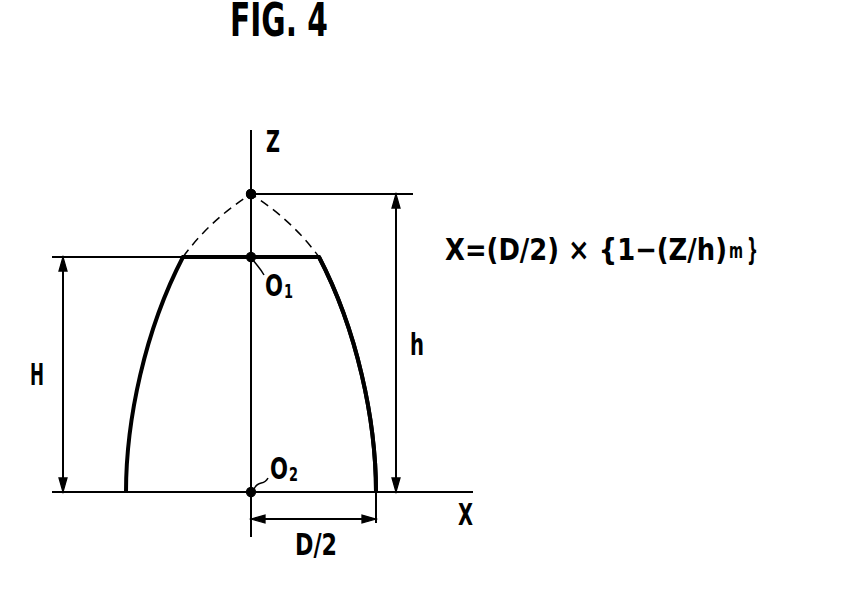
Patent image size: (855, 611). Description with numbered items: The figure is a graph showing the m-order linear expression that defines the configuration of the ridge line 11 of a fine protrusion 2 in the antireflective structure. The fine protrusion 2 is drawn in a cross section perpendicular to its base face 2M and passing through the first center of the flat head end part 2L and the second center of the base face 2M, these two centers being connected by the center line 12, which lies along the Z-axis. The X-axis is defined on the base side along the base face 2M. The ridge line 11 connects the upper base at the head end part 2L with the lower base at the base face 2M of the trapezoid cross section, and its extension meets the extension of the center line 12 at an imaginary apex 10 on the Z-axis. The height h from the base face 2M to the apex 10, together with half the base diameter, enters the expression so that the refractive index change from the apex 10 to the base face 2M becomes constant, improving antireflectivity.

The fine protrusion 2 is at (160, 337).
The head end part 2L is at (222, 253).
The base face 2M is at (155, 492).
The apex 10 is at (253, 193).
The ridge line 11 is at (358, 347).
The center line 12 is at (251, 382).